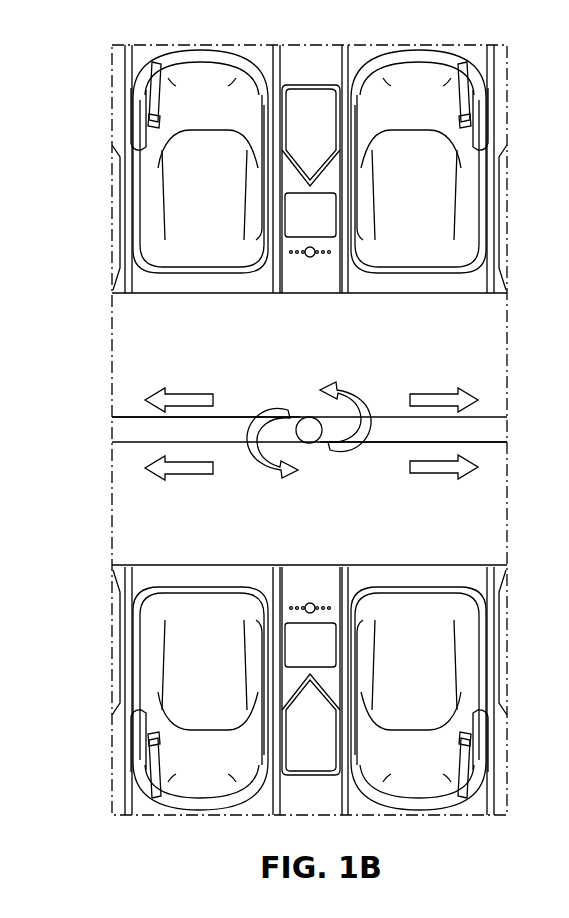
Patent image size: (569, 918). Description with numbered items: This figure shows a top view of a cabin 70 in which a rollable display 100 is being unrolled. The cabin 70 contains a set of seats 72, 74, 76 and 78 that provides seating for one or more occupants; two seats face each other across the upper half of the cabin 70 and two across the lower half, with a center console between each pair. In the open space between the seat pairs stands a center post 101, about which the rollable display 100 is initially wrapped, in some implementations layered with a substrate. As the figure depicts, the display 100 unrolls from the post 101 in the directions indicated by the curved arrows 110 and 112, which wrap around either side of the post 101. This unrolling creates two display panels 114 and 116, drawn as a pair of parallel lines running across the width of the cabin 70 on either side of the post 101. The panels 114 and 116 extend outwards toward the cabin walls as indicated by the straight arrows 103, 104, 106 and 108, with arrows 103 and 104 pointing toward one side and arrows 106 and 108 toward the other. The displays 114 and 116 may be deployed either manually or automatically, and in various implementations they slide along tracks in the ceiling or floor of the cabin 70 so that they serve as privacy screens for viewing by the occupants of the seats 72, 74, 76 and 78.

The cabin 70 is at (143, 352).
The seat 72 is at (143, 200).
The seat 74 is at (470, 203).
The seat 76 is at (143, 647).
The seat 78 is at (470, 650).
The rollable display 100 is at (385, 416).
The center post 101 is at (309, 416).
The arrow 103 is at (178, 393).
The arrow 104 is at (188, 475).
The arrow 106 is at (440, 393).
The arrow 108 is at (433, 474).
The arrow 110 is at (282, 482).
The arrow 112 is at (335, 468).
The display panel 114 is at (236, 416).
The display panel 116 is at (383, 444).